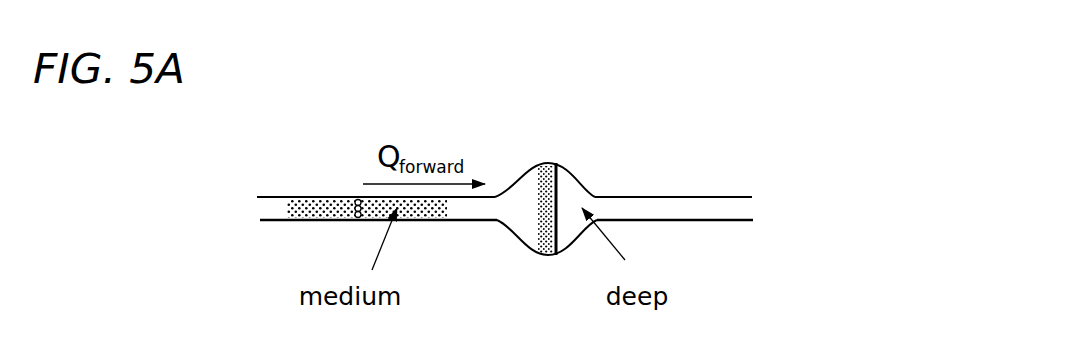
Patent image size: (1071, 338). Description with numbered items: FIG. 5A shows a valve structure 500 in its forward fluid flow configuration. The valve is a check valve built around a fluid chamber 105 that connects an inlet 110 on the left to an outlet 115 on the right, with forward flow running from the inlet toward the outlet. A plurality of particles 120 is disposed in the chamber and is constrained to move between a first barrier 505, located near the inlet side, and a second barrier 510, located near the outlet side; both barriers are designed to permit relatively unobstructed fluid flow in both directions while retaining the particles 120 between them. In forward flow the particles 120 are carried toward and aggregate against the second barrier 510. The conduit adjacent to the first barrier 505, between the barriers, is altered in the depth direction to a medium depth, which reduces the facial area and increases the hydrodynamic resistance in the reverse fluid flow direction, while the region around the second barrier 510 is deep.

The valve structure 500 is at (528, 209).
The fluid chamber 105 is at (474, 209).
The inlet 110 is at (263, 212).
The outlet 115 is at (673, 207).
The particles 120 is at (537, 200).
The second barrier 510 is at (562, 192).
The first barrier 505 is at (358, 197).